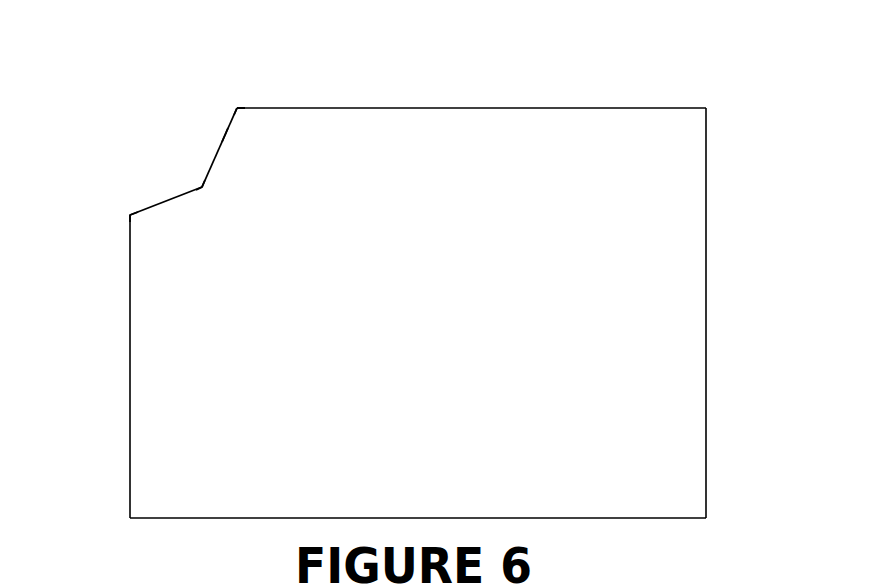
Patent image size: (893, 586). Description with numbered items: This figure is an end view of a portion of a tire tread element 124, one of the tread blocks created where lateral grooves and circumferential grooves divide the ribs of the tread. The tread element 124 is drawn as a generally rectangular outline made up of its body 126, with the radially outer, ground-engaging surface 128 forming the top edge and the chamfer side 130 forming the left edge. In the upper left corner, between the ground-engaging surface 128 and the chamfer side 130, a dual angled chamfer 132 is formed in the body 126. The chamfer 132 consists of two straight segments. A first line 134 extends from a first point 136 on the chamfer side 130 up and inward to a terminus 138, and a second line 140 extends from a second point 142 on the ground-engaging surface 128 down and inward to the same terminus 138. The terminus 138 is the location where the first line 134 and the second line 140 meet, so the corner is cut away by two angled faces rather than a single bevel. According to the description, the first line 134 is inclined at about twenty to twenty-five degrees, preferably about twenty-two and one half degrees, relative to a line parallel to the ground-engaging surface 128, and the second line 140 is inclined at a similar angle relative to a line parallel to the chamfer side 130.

The tread element 124 is at (706, 252).
The body 126 is at (680, 310).
The ground-engaging surface 128 is at (562, 108).
The chamfer side 130 is at (128, 423).
The dual angled chamfer 132 is at (217, 152).
The first line 134 is at (158, 207).
The first point 136 is at (128, 215).
The terminus 138 is at (202, 187).
The second line 140 is at (225, 135).
The second point 142 is at (237, 108).